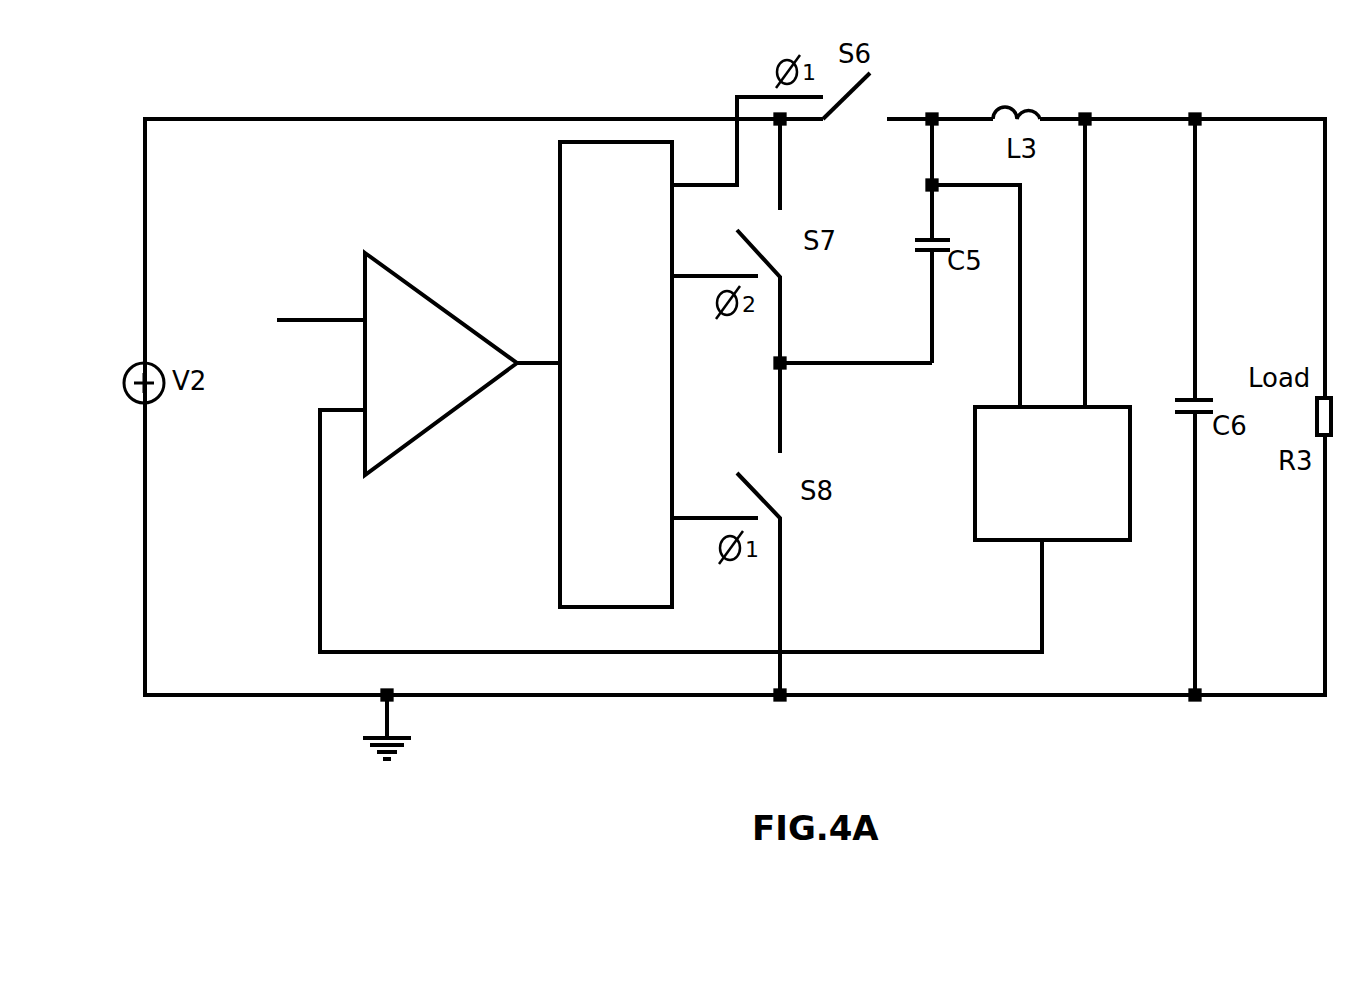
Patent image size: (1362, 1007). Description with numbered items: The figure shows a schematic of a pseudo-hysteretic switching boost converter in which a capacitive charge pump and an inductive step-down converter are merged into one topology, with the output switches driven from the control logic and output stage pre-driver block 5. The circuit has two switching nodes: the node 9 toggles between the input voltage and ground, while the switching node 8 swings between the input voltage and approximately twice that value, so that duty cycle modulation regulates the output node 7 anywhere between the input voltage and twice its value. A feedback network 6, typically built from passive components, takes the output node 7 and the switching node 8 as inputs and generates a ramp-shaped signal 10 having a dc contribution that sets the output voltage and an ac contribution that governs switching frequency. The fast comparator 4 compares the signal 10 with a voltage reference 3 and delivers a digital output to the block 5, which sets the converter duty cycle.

The voltage reference 3 is at (330, 313).
The fast comparator 4 is at (377, 253).
The control logic and output stage pre-driver block 5 is at (582, 142).
The feedback network 6 is at (1095, 400).
The output node 7 is at (1148, 115).
The switching node 8 is at (1013, 302).
The switching node 9 is at (832, 367).
The feedback signal 10 is at (315, 512).